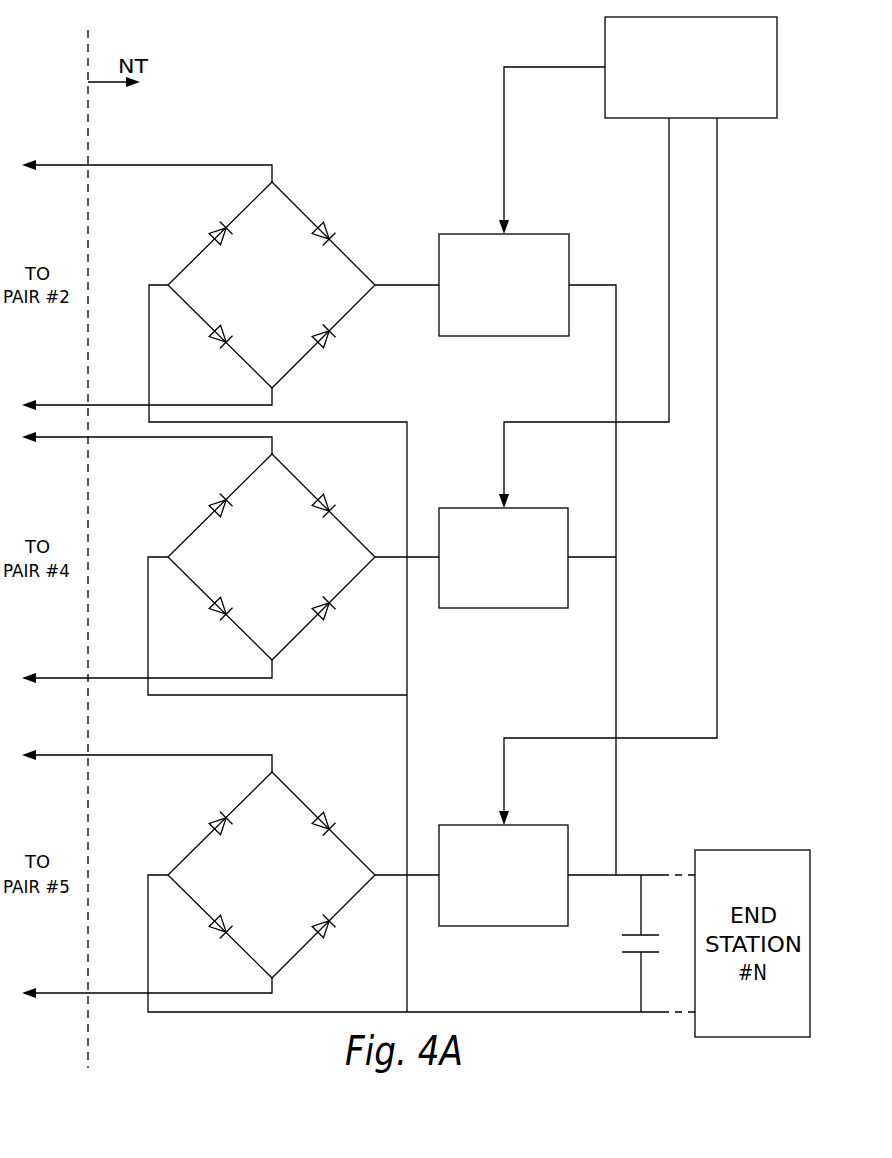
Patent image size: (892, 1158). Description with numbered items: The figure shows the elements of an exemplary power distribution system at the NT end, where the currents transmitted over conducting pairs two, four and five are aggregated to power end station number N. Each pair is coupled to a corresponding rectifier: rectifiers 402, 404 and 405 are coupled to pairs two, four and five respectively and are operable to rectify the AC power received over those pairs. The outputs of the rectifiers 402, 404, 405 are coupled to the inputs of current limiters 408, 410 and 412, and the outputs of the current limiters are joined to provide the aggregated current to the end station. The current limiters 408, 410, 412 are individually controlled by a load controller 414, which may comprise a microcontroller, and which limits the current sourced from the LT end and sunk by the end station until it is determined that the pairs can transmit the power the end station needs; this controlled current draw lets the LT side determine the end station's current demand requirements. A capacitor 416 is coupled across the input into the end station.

The rectifier 402 is at (290, 296).
The rectifier 404 is at (271, 557).
The rectifier 405 is at (271, 875).
The current limiter 408 is at (541, 234).
The current limiter 410 is at (538, 508).
The current limiter 412 is at (538, 825).
The load controller 414 is at (604, 90).
The capacitor 416 is at (616, 946).